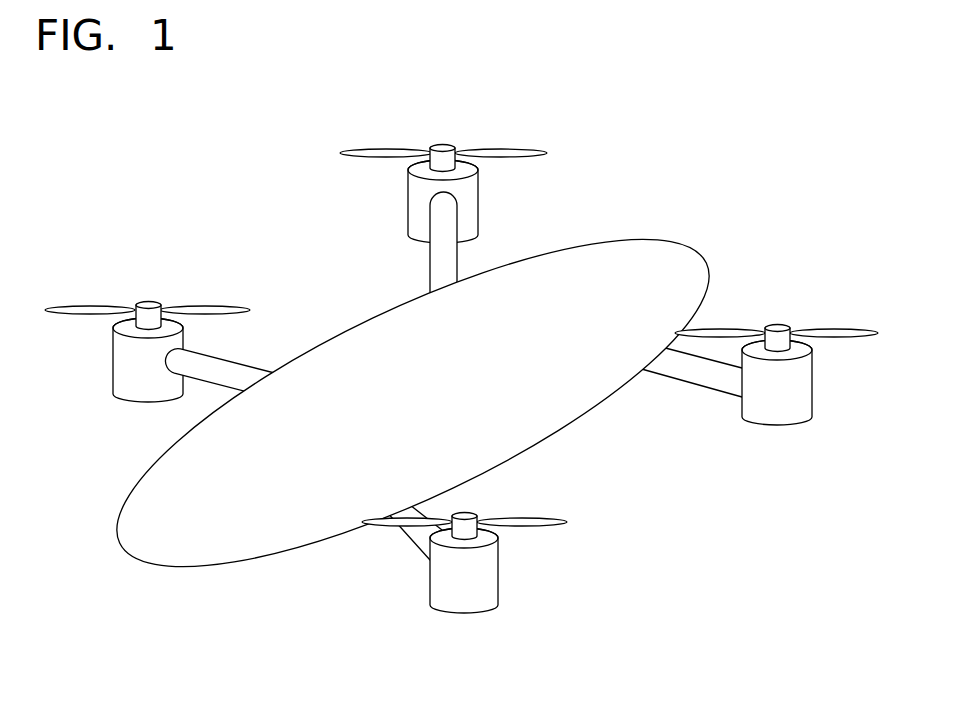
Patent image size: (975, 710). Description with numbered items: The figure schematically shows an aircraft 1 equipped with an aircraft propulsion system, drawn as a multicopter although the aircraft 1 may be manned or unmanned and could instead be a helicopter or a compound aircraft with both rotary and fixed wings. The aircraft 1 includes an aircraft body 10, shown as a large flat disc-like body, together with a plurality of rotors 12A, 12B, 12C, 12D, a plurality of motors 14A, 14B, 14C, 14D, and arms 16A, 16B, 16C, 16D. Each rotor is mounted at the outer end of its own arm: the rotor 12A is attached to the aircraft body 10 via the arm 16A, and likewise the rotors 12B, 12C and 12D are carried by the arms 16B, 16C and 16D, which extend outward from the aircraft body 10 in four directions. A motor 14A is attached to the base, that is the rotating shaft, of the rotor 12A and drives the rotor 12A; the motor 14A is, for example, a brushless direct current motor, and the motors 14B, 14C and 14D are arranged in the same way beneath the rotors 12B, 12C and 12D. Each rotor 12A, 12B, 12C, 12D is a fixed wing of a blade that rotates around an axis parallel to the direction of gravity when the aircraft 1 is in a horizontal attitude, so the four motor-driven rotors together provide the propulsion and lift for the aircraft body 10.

The aircraft 1 is at (125, 104).
The aircraft body 10 is at (160, 560).
The rotor 12A is at (200, 307).
The rotor 12B is at (495, 150).
The rotor 12C is at (530, 527).
The rotor 12D is at (847, 338).
The motor 14A is at (113, 358).
The motor 14B is at (408, 200).
The motor 14C is at (463, 612).
The motor 14D is at (775, 424).
The arm 16A is at (250, 366).
The arm 16B is at (430, 258).
The arm 16C is at (405, 546).
The arm 16D is at (698, 385).